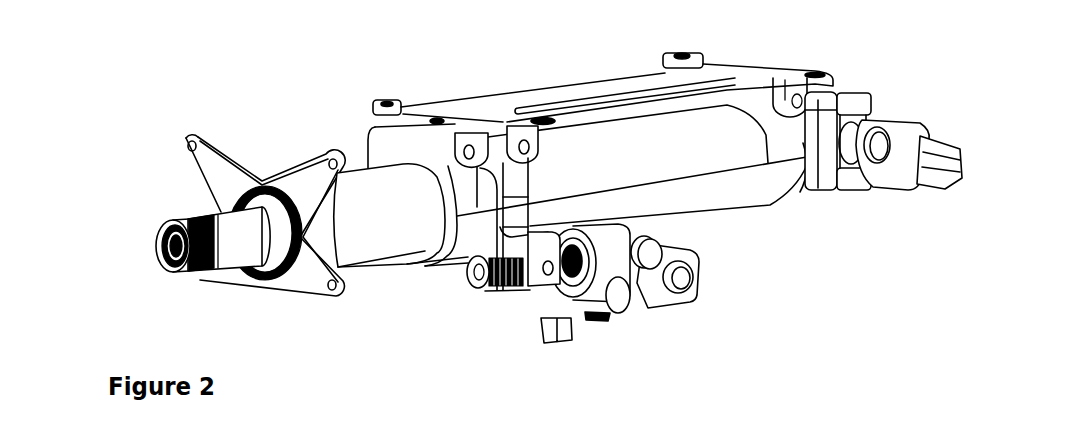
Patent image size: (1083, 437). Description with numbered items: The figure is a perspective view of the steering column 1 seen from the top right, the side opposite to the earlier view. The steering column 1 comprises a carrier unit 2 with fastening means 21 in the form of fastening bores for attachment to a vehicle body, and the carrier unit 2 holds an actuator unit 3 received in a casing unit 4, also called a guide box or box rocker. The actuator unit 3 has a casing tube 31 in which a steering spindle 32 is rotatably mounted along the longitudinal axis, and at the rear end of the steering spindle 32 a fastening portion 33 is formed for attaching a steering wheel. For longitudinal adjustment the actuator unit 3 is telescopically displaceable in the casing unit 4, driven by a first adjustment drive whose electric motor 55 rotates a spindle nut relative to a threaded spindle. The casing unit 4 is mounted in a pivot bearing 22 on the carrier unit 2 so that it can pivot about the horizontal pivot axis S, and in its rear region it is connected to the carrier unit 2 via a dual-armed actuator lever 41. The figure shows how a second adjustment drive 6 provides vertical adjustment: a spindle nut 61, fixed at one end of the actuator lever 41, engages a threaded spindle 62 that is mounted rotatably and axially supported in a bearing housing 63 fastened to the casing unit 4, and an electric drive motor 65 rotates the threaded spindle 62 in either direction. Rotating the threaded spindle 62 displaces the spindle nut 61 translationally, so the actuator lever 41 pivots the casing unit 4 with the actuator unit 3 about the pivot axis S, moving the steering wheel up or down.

The steering column 1 is at (546, 64).
The carrier unit 2 is at (541, 96).
The fastening means 21 is at (681, 53).
The pivot bearing 22 is at (797, 96).
The actuator unit 3 is at (284, 238).
The casing tube 31 is at (376, 243).
The steering spindle 32 is at (231, 246).
The fastening portion 33 is at (183, 218).
The casing unit 4 is at (703, 148).
The actuator lever 41 is at (513, 178).
The electric motor 55 is at (684, 257).
The adjustment drive 6 is at (627, 330).
The spindle nut 61 is at (522, 281).
The threaded spindle 62 is at (502, 288).
The bearing housing 63 is at (608, 261).
The electric drive motor 65 is at (492, 297).
The pivot axis S is at (894, 115).